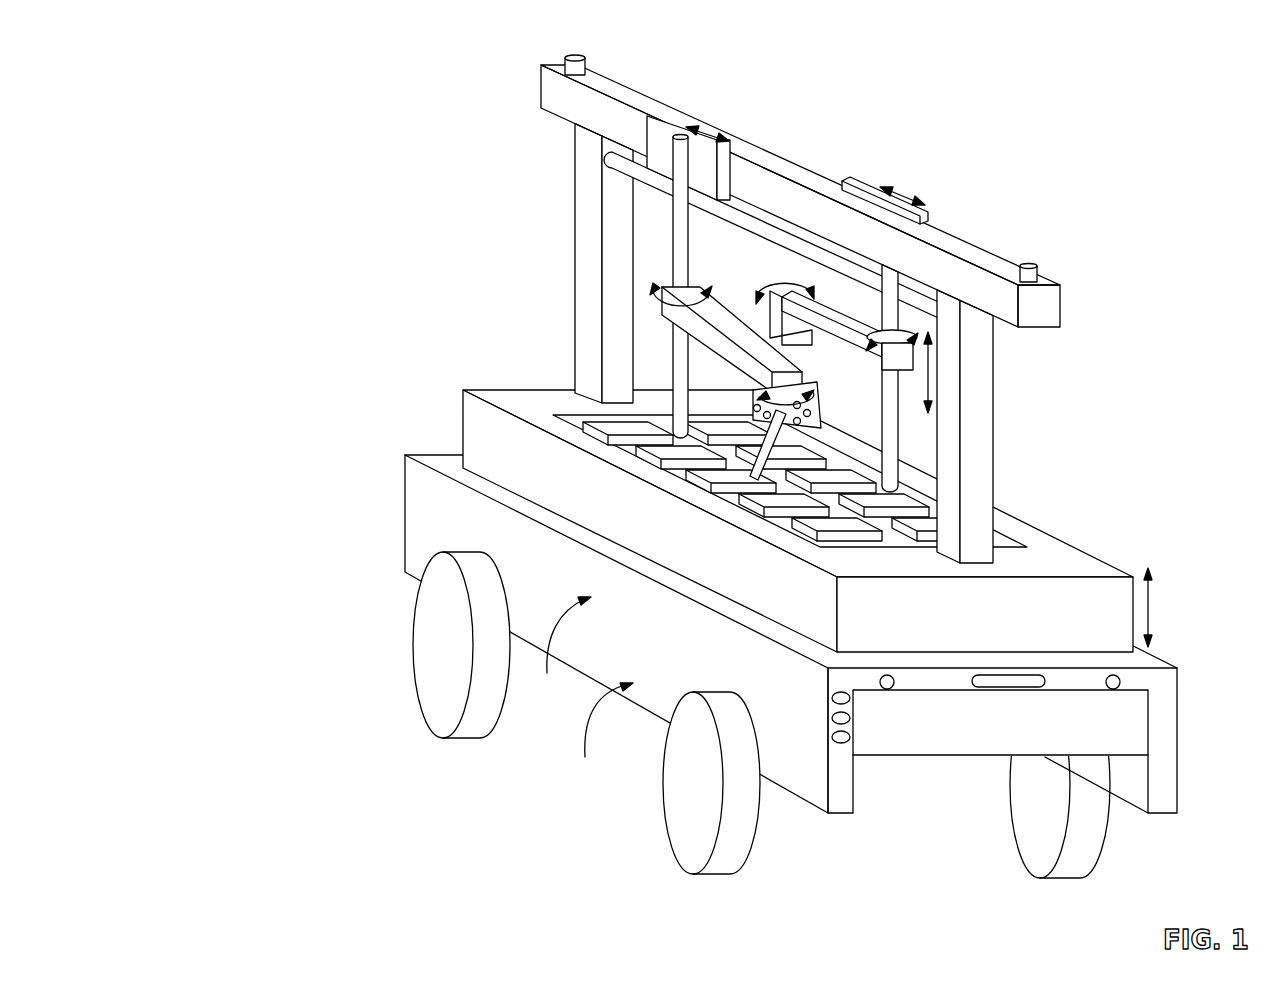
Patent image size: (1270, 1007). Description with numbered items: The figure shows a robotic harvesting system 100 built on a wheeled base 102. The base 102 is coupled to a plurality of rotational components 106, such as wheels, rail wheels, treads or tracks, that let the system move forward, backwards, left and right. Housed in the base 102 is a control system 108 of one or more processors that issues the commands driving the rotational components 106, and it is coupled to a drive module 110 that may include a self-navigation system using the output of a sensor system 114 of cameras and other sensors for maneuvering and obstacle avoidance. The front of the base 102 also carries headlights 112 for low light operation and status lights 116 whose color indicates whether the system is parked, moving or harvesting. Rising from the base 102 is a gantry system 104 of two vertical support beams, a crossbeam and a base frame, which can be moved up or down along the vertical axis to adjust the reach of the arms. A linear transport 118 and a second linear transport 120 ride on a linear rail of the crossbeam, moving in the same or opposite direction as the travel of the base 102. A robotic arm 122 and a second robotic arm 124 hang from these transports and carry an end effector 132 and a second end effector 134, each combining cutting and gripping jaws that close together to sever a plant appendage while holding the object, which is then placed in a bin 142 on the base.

The robotic harvesting system 100 is at (667, 453).
The base 102 is at (404, 485).
The gantry system 104 is at (586, 340).
The rotational components 106 is at (698, 810).
The control system 108 is at (558, 652).
The drive module 110 is at (599, 736).
The headlights 112 is at (908, 684).
The sensor system 114 is at (1013, 685).
The status lights 116 is at (818, 738).
The linear transport 118 is at (667, 120).
The second linear transport 120 is at (861, 186).
The robotic arm 122 is at (724, 305).
The second robotic arm 124 is at (842, 338).
The end effector 132 is at (738, 471).
The second end effector 134 is at (877, 293).
The bin 142 is at (858, 540).